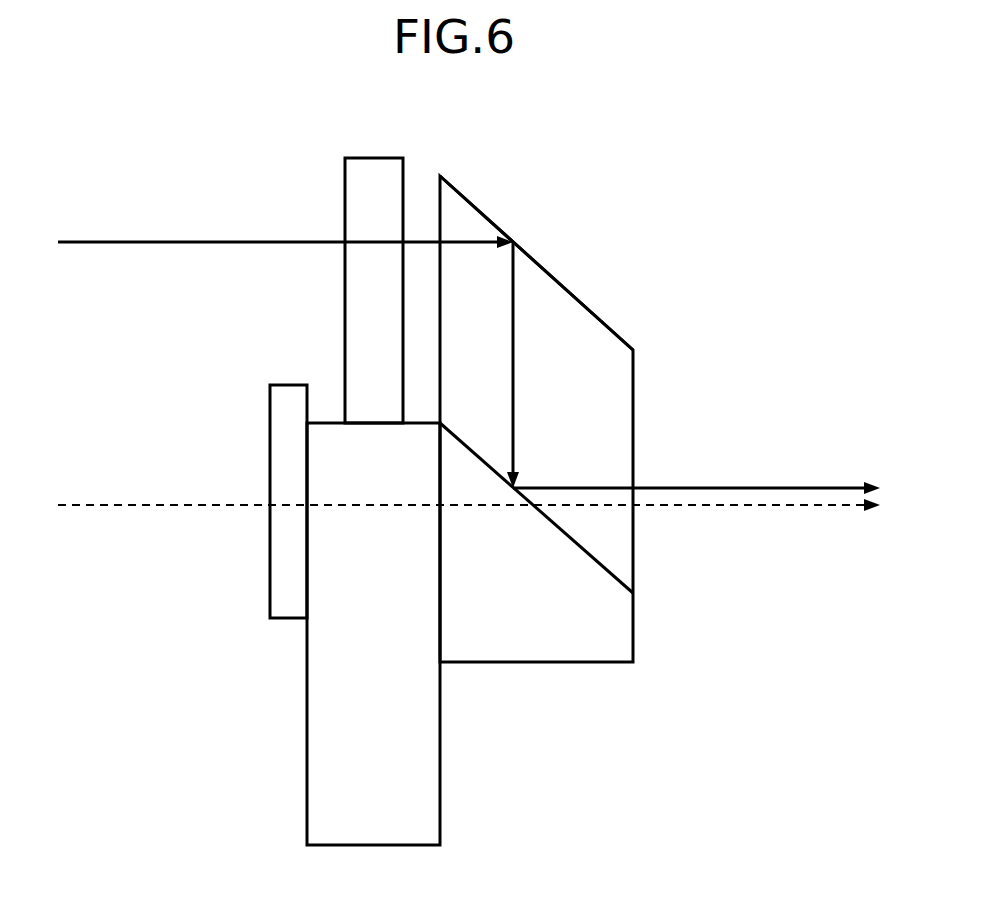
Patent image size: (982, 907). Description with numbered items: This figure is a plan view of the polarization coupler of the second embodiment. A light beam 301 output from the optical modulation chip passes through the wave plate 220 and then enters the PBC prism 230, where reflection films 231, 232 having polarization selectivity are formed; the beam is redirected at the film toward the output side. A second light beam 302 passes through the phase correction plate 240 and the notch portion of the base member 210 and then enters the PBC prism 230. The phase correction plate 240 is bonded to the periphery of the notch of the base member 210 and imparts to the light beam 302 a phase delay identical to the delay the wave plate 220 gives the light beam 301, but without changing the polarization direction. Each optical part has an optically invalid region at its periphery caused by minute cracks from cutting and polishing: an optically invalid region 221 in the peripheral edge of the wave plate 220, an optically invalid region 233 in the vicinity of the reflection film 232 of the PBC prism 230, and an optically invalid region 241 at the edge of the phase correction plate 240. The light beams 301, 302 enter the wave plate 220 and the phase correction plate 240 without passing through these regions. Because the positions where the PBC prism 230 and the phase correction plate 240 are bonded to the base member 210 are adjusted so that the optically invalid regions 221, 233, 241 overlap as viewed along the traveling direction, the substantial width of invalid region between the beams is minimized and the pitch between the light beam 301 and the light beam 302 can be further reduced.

The base member 210 is at (372, 846).
The wave plate 220 is at (372, 157).
The optically invalid region 221 is at (337, 419).
The PBC prism 230 is at (535, 663).
The reflection film 231 is at (576, 292).
The reflection film 232 is at (560, 535).
The optically invalid region 233 is at (447, 384).
The phase correction plate 240 is at (270, 582).
The optically invalid region 241 is at (264, 384).
The light beam 301 is at (97, 240).
The light beam 302 is at (99, 502).